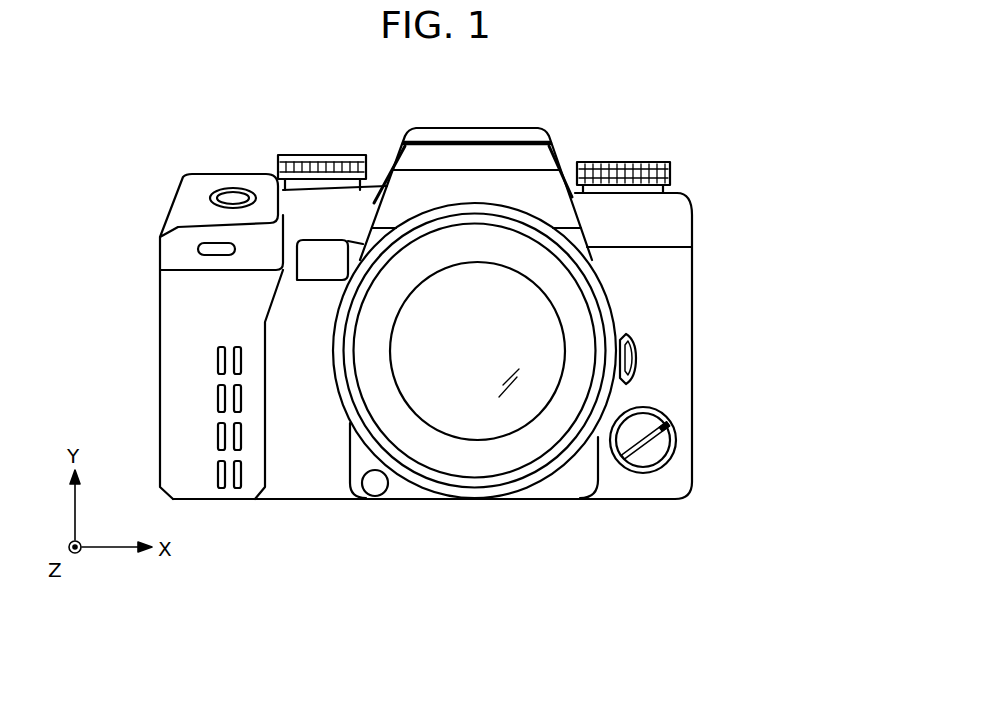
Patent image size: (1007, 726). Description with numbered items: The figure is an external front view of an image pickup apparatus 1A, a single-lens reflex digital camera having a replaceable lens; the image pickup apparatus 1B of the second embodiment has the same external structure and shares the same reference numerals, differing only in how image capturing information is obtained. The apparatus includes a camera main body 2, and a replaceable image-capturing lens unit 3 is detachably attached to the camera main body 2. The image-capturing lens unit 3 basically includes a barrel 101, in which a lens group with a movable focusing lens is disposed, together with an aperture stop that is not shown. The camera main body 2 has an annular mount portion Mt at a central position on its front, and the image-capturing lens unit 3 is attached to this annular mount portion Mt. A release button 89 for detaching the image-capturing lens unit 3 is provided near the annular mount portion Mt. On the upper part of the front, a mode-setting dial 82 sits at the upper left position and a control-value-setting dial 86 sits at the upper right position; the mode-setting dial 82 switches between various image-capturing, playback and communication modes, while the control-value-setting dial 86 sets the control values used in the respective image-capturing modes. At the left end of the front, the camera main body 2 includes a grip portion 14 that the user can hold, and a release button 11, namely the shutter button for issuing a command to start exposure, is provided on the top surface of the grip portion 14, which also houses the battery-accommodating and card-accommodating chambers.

The image pickup apparatus 1A is at (507, 89).
The image pickup apparatus 1B is at (550, 89).
The camera main body 2 is at (694, 300).
The image-capturing lens unit 3 is at (530, 452).
The release button 11 is at (233, 197).
The grip portion 14 is at (172, 372).
The mode-setting dial 82 is at (322, 155).
The control-value-setting dial 86 is at (621, 162).
The release button 89 is at (640, 355).
The barrel 101 is at (612, 287).
The annular mount portion Mt is at (339, 414).